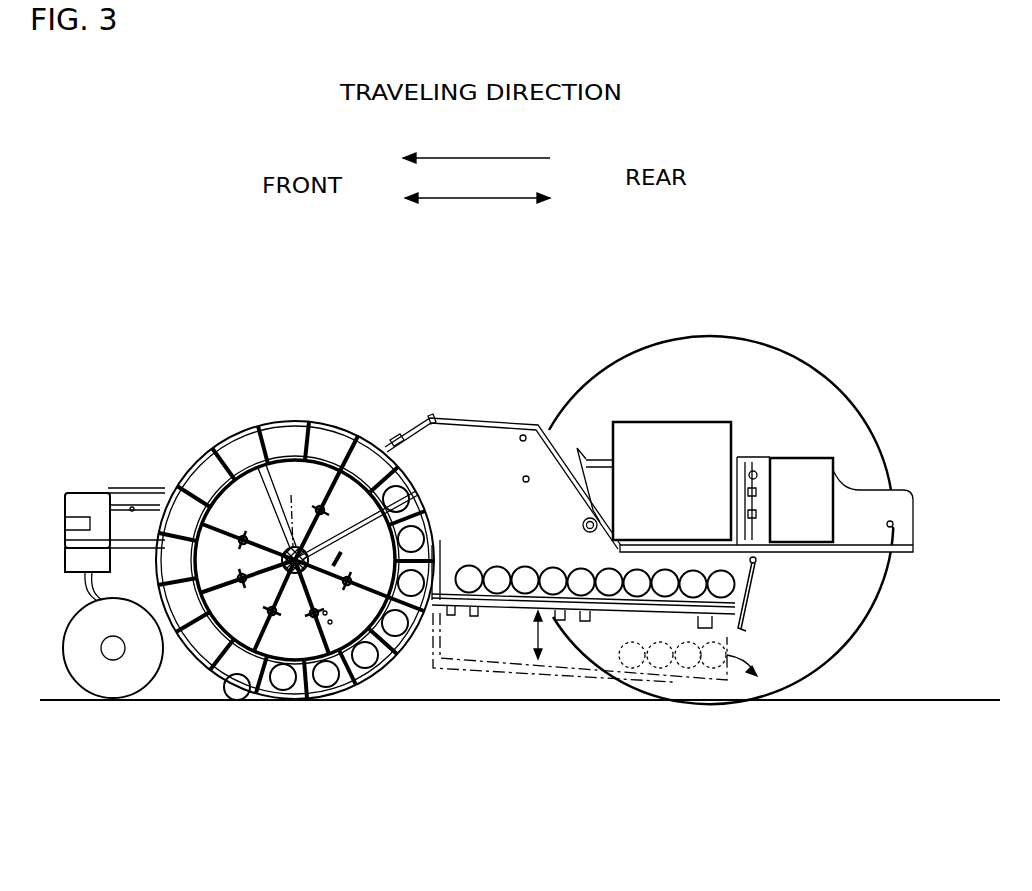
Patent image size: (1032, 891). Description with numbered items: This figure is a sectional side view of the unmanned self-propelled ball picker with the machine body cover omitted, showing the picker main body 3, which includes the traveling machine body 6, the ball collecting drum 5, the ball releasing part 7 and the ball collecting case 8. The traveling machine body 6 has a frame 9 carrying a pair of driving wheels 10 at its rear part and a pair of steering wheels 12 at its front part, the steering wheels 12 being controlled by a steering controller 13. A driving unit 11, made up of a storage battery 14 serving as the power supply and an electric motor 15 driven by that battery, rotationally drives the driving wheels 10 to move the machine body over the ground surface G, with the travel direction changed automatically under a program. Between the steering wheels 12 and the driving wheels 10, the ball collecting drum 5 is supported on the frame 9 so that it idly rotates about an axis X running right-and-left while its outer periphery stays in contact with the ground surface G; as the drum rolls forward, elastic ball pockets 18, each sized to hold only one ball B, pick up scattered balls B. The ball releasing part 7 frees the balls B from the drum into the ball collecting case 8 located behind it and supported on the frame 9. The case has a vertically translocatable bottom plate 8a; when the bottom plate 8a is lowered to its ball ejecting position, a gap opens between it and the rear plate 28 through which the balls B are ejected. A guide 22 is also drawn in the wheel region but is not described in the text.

The picker main body 3 is at (530, 412).
The ball collecting drum 5 is at (295, 526).
The traveling machine body 6 is at (127, 490).
The ball releasing part 7 is at (370, 450).
The ball collecting case 8 is at (480, 419).
The bottom plate 8a is at (515, 603).
The frame 9 is at (150, 493).
The driving wheel 10 is at (820, 369).
The driving unit 11 is at (763, 392).
The steering wheel 12 is at (93, 672).
The steering controller 13 is at (78, 558).
The storage battery 14 is at (792, 483).
The electric motor 15 is at (664, 447).
The ball pocket 18 is at (340, 678).
The guide 22 is at (241, 458).
The rear plate 28 is at (742, 596).
The ball B is at (227, 690).
The ground surface G is at (172, 690).
The axis X is at (290, 508).